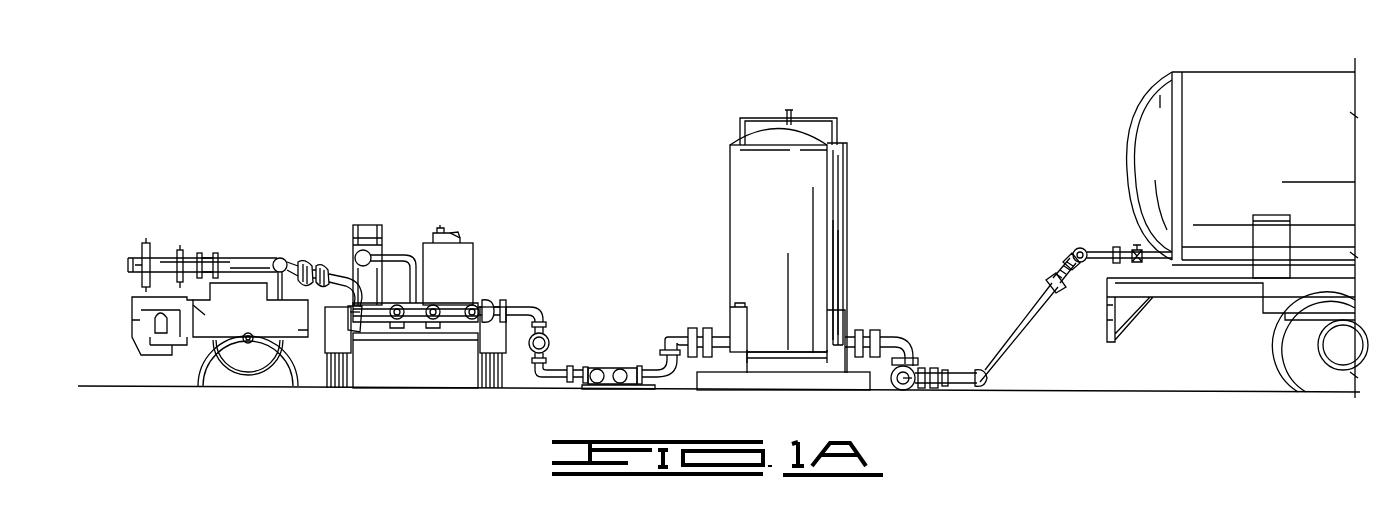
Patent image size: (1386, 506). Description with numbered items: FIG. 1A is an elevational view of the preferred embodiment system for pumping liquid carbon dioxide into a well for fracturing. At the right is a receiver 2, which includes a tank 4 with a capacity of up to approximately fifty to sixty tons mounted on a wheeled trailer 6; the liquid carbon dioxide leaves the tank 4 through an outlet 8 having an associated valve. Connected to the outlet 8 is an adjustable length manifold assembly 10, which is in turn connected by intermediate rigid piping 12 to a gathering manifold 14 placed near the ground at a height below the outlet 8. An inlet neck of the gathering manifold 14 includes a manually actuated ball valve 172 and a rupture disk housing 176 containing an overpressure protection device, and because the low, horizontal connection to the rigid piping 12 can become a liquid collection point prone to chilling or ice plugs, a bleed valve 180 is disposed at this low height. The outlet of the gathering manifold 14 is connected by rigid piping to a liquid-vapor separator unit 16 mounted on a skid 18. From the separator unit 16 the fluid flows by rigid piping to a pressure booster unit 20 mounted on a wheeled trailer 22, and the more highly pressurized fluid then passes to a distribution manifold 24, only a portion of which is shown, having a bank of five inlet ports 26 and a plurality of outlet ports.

The receiver 2 is at (1240, 70).
The tank 4 is at (1147, 145).
The wheeled trailer 6 is at (1197, 293).
The outlet 8 is at (1122, 242).
The adjustable length manifold assembly 10 is at (1058, 293).
The rigid piping 12 is at (963, 367).
The gathering manifold 14 is at (892, 392).
The liquid-vapor separator unit 16 is at (747, 180).
The skid 18 is at (847, 347).
The pressure booster unit 20 is at (480, 240).
The wheeled trailer 22 is at (412, 330).
The distribution manifold 24 is at (128, 252).
The inlet ports 26 is at (296, 250).
The ball valve 172 is at (925, 388).
The rupture disk housing 176 is at (937, 388).
The bleed valve 180 is at (987, 384).